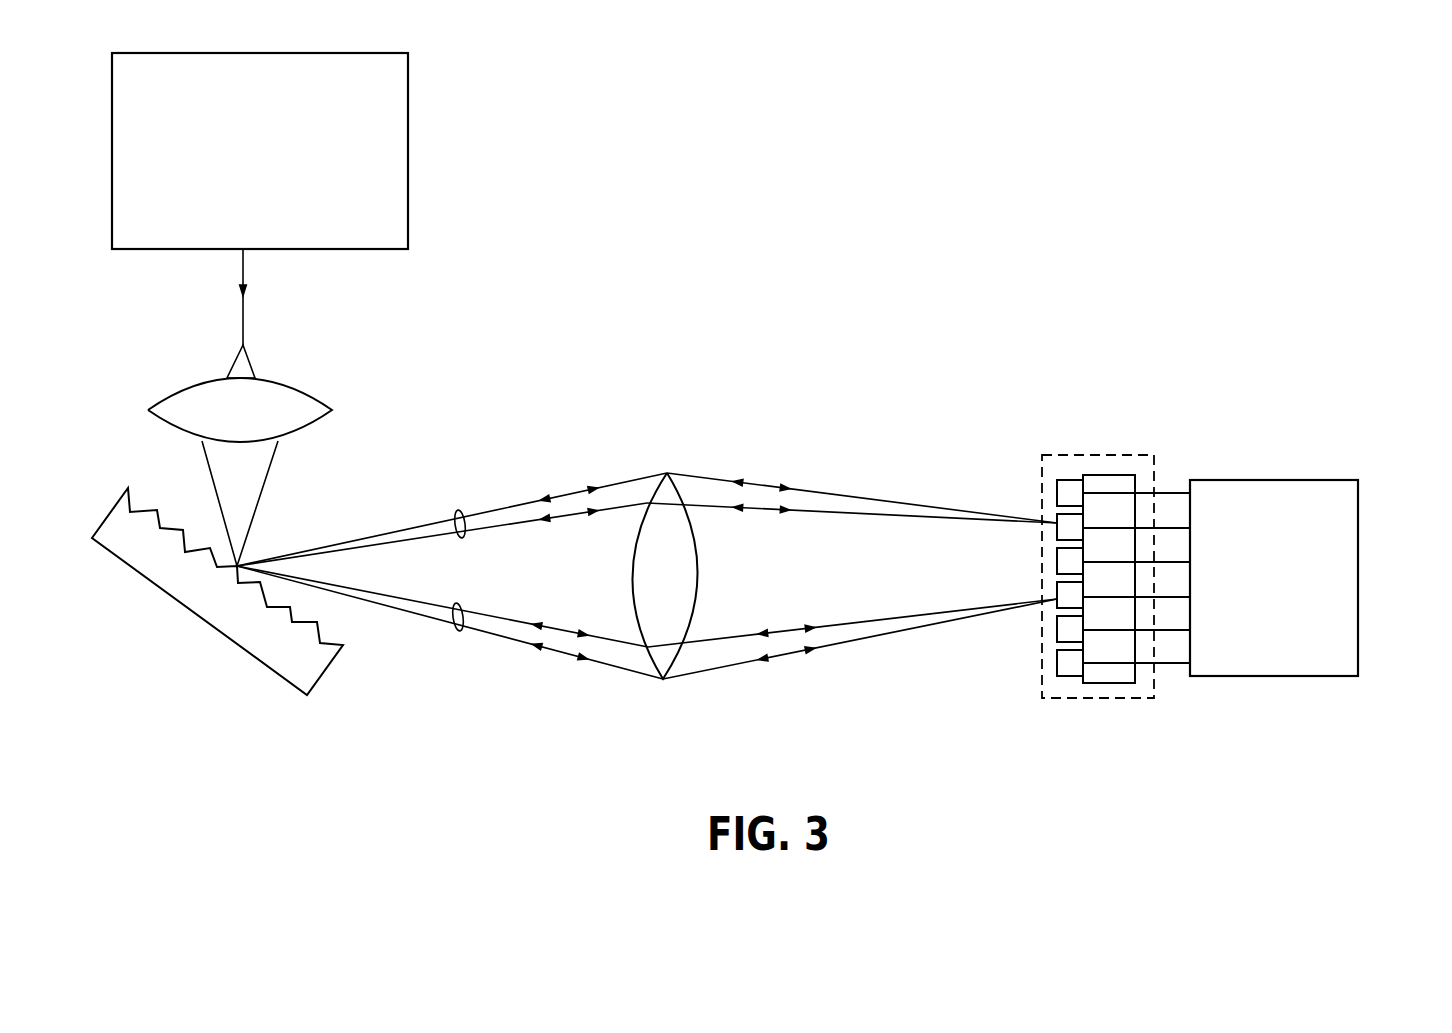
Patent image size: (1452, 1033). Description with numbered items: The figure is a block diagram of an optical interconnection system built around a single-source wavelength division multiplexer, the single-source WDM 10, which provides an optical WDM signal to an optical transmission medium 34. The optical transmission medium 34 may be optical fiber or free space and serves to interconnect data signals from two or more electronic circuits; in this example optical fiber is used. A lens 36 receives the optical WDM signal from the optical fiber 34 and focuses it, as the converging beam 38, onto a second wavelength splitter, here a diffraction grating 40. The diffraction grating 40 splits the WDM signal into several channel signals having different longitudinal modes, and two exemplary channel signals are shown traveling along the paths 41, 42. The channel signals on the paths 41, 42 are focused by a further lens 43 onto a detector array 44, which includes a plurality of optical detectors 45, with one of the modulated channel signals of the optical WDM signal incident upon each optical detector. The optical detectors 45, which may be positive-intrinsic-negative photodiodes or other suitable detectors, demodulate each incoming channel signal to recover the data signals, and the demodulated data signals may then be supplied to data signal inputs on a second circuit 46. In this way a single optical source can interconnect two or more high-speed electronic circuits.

The single-source WDM 10 is at (408, 132).
The optical transmission medium 34 is at (245, 333).
The lens 36 is at (307, 393).
The focused beam 38 is at (260, 503).
The diffraction grating 40 is at (198, 617).
The path 41 is at (460, 510).
The path 42 is at (460, 603).
The lens 43 is at (698, 567).
The detector array 44 is at (1111, 552).
The optical detectors 45 is at (1057, 490).
The second circuit 46 is at (1358, 590).